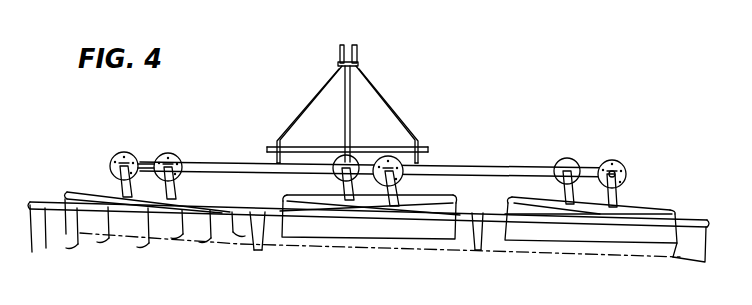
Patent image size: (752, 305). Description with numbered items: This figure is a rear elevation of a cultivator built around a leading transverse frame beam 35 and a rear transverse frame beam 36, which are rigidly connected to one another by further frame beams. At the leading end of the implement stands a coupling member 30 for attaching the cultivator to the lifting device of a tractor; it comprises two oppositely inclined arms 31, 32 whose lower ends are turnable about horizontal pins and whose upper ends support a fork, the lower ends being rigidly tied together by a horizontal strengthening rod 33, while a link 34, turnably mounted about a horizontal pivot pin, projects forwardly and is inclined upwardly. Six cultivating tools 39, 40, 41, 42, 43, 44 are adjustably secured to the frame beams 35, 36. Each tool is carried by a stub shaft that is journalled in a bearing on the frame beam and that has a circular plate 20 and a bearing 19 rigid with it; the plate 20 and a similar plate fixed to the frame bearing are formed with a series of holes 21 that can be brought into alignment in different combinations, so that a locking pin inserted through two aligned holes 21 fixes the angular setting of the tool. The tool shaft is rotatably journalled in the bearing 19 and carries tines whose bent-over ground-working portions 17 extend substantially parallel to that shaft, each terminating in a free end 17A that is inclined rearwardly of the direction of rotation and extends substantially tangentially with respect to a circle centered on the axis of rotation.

The ground-working portion 17 is at (150, 238).
The free end 17A is at (143, 242).
The bearing 19 is at (612, 196).
The circular plate 20 is at (173, 152).
The holes 21 is at (617, 168).
The coupling member 30 is at (366, 79).
The arm 31 is at (396, 116).
The arm 32 is at (311, 102).
The horizontal strengthening rod 33 is at (318, 146).
The link 34 is at (350, 137).
The leading transverse frame beam 35 is at (152, 161).
The rear transverse frame beam 36 is at (237, 164).
The cultivating tool 39 is at (495, 255).
The cultivating tool 40 is at (278, 254).
The cultivating tool 41 is at (74, 243).
The cultivating tool 42 is at (665, 260).
The cultivating tool 43 is at (461, 257).
The cultivating tool 44 is at (82, 186).